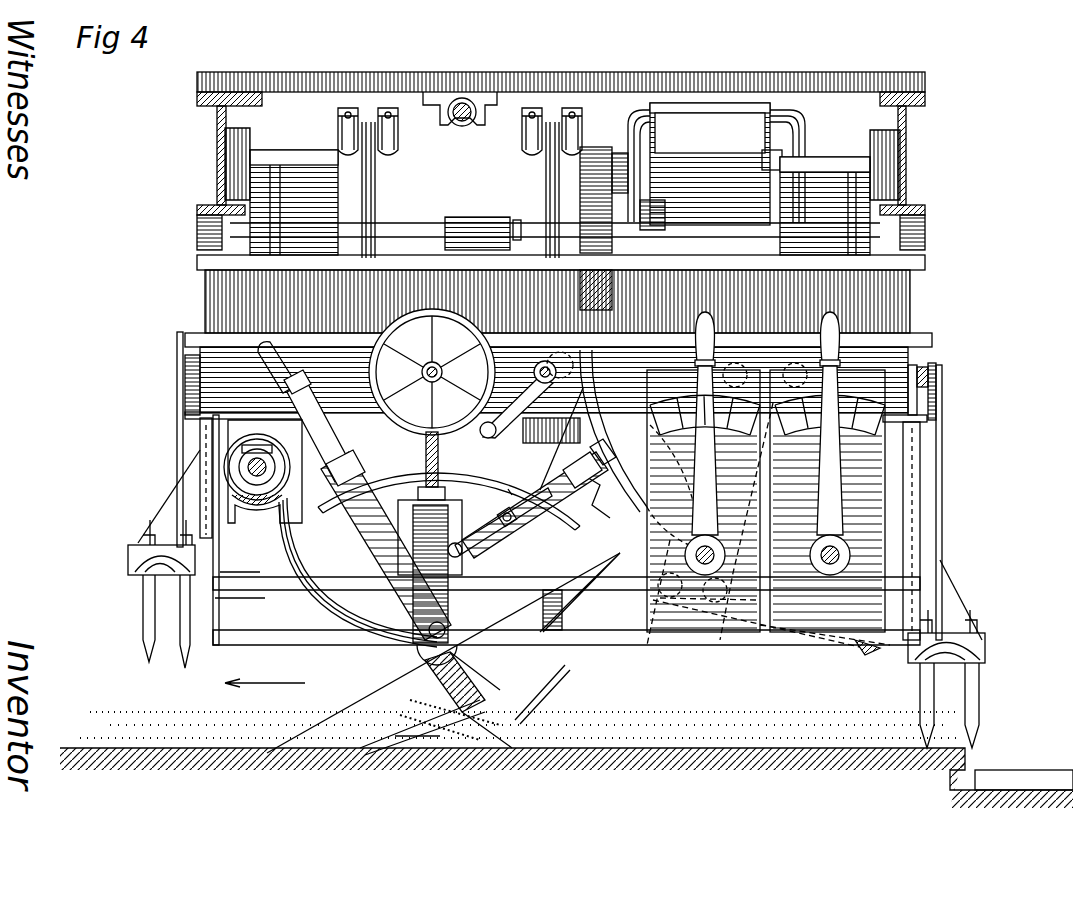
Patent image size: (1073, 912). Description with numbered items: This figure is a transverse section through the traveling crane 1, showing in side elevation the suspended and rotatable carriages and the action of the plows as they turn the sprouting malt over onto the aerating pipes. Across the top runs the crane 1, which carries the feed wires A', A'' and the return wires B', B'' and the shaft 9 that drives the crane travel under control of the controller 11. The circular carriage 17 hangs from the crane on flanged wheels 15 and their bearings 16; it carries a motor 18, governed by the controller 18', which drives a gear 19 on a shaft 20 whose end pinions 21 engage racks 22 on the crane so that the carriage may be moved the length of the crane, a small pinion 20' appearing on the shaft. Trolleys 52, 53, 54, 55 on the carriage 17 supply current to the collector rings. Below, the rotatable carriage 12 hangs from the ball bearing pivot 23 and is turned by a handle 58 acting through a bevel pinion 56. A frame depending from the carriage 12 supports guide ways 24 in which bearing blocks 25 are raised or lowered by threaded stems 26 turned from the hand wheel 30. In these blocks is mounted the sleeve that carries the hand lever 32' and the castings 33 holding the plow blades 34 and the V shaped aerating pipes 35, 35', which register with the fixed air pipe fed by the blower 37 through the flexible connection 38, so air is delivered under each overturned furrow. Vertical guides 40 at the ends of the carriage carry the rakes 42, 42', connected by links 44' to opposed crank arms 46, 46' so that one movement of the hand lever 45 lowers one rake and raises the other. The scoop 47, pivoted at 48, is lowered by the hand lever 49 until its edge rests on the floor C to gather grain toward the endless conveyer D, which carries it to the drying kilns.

The traveling crane 1 is at (212, 118).
The shaft 9 is at (462, 98).
The controller 11 is at (670, 472).
The rotatable carriage 12 is at (215, 395).
The flanged wheels 15 is at (240, 138).
The bearings 16 is at (300, 150).
The circular carriage 17 is at (205, 300).
The motor 18 is at (716, 164).
The controller 18' is at (827, 472).
The gear 19 is at (578, 215).
The shaft 20 is at (555, 219).
The pinion 20' is at (676, 205).
The pinions 21 is at (197, 240).
The racks 22 is at (197, 210).
The ball bearing pivot 23 is at (464, 491).
The guide ways 24 is at (398, 535).
The bearing blocks 25 is at (470, 552).
The threaded stems 26 is at (440, 460).
The hand wheel 30 is at (395, 328).
The hand lever 32' is at (354, 491).
The castings 33 is at (464, 696).
The plow blades 34 is at (575, 605).
The aerating pipe 35 is at (412, 751).
The aerating pipe 35' is at (545, 694).
The blower 37 is at (263, 480).
The flexible connection 38 is at (325, 606).
The vertical guides 40 is at (198, 490).
The rake 42 is at (139, 594).
The rake 42' is at (966, 679).
The links 44' is at (556, 486).
The hand lever 45 is at (927, 418).
The crank arm 46 is at (162, 378).
The crank arm 46' is at (959, 391).
The scoop 47 is at (860, 650).
The pivot 48 is at (660, 638).
The hand lever 49 is at (572, 490).
The trolley 52 is at (338, 112).
The trolley 53 is at (398, 147).
The trolley 54 is at (522, 147).
The trolley 55 is at (582, 120).
The bevel pinion 56 is at (640, 390).
The handle 58 is at (530, 404).
The floor C is at (118, 748).
The endless conveyer D is at (1024, 771).
The feed wire A' is at (345, 77).
The return wire B' is at (394, 77).
The feed wire A'' is at (540, 77).
The return wire B'' is at (588, 77).